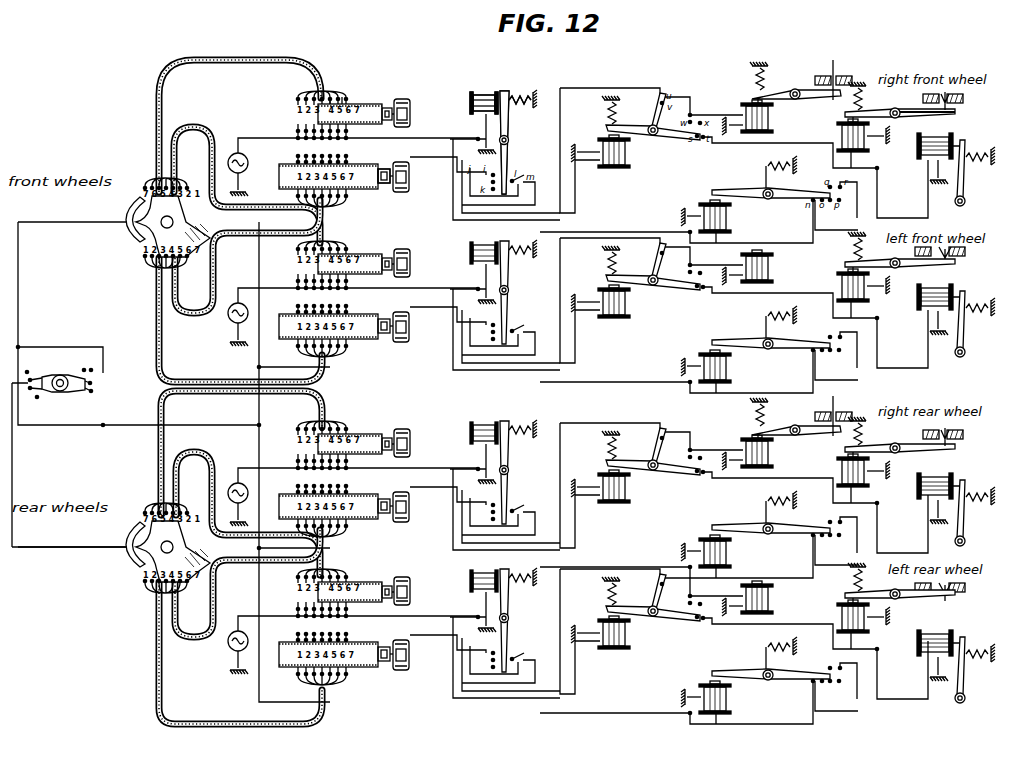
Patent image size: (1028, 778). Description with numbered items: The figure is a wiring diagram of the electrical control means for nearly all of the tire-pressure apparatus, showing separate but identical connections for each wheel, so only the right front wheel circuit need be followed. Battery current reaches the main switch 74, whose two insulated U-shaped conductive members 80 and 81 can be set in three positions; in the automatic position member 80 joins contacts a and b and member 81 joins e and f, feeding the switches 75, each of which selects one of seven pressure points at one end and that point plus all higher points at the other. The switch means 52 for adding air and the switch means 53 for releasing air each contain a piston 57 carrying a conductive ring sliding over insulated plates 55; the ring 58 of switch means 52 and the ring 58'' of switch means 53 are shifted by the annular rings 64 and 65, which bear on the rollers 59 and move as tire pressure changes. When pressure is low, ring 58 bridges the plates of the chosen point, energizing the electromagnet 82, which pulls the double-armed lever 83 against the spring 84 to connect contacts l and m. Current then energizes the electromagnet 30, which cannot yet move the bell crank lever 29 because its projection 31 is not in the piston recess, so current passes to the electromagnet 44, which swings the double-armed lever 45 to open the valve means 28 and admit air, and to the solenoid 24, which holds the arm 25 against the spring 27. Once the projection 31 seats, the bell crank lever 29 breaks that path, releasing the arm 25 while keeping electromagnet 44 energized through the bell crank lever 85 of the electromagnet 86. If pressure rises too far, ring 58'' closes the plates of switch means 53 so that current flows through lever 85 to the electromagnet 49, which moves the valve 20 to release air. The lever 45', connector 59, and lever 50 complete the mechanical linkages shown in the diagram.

The switch means 52 is at (300, 93).
The electrically conductive plates 55 is at (330, 97).
The electrically conductive ring 58 is at (352, 82).
The piston 57 is at (352, 104).
The annular ring 64 is at (404, 100).
The electromagnet 82 is at (485, 93).
The spring 84 is at (521, 97).
The double-armed lever 83 is at (510, 124).
The lever 50 is at (775, 93).
The roller 59 is at (383, 169).
The annular ring 65 is at (410, 176).
The switch means 53 is at (276, 183).
The electrically conductive ring 58'' is at (247, 185).
The switch 75 is at (175, 212).
The main switch 74 is at (60, 375).
The U-shaped electrically conductive member 80 is at (40, 375).
The U-shaped electrically conductive member 81 is at (85, 395).
The electromagnet 86 is at (612, 170).
The bell crank lever 85 is at (650, 138).
The electromagnet 49 is at (772, 118).
The valve 20 is at (838, 77).
The electromagnet 44 is at (838, 134).
The double-armed lever 45 is at (900, 102).
The lever arm 45' is at (926, 121).
The solenoid 24 is at (941, 131).
The valve means 28 is at (958, 99).
The spring 27 is at (980, 155).
The arm 25 is at (967, 185).
The projection 31 is at (766, 164).
The bell crank lever 29 is at (745, 186).
The electromagnet 30 is at (729, 222).